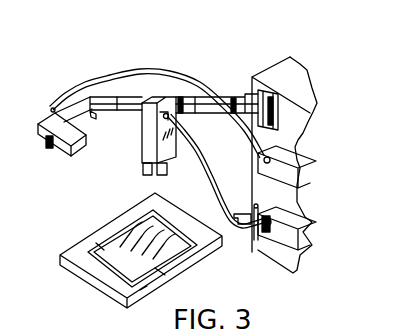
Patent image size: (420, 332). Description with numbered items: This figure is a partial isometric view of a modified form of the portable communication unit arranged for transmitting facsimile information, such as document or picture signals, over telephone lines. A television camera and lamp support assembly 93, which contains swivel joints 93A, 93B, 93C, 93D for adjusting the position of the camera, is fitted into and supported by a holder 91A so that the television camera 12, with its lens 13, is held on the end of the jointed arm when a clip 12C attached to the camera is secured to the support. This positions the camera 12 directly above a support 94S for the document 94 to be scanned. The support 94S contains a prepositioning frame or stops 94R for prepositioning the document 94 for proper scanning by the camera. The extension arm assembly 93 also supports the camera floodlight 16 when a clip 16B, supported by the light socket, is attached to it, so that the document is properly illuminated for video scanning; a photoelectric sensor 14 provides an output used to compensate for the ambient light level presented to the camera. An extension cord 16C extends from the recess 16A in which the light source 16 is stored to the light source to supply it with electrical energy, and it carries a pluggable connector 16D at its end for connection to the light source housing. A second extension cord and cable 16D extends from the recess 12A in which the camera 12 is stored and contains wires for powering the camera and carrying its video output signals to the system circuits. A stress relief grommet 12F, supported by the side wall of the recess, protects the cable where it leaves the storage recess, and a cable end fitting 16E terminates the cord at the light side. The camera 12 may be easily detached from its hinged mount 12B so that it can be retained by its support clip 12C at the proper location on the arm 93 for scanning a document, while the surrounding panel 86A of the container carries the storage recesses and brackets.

The television camera 12 is at (170, 161).
The storage compartment 12A is at (307, 237).
The hinged support 12B is at (243, 233).
The clip 12C is at (178, 98).
The stress relief grommet 12F is at (262, 252).
The lens 13 is at (161, 176).
The photoelectric sensor 14 is at (147, 176).
The supplemental light source 16 is at (80, 135).
The compartment 16A is at (297, 184).
The clip 16B is at (92, 115).
The extension cord 16C is at (68, 89).
The extension cord and cable 16D is at (53, 103).
The cable end 16E is at (258, 163).
The support panel 86A is at (312, 78).
The holder 91A is at (274, 97).
The television camera and lamp support assembly 93 is at (128, 95).
The swivel joint 93A is at (82, 90).
The swivel joint 93B is at (117, 97).
The swivel joint 93C is at (196, 97).
The swivel joint 93D is at (241, 96).
The document 94 is at (128, 227).
The prepositioning frame or stops 94R is at (147, 283).
The support 94S is at (72, 278).